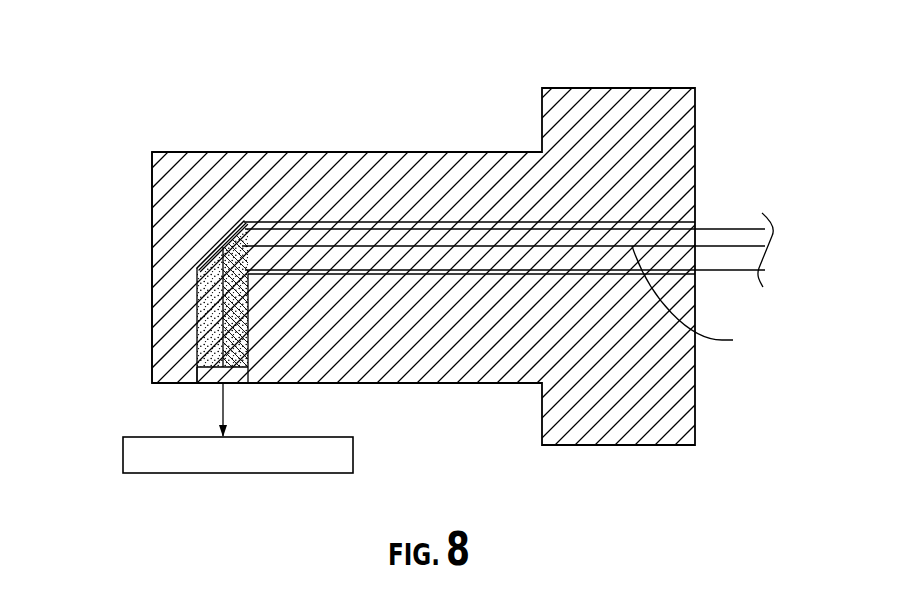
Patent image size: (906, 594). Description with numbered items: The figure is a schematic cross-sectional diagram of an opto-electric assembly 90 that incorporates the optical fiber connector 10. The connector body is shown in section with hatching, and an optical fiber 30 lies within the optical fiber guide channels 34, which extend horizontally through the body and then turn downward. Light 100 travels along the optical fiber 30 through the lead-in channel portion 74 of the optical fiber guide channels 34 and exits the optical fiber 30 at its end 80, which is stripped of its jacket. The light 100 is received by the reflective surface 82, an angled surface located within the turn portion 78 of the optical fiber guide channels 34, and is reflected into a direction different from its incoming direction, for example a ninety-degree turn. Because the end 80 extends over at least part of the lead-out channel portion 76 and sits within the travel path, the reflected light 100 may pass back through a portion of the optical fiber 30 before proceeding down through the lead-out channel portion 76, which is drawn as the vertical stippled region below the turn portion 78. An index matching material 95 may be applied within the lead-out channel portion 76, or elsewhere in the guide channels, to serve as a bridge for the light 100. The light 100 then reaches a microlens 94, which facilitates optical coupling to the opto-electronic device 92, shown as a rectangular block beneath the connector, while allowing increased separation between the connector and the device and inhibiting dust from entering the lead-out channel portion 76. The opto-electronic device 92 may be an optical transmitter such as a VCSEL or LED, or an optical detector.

The optical fiber connector 10 is at (397, 123).
The optical fiber 30 is at (595, 233).
The optical fiber guide channels 34 is at (350, 227).
The lead-in channel portion 74 is at (528, 221).
The lead-out channel portion 76 is at (252, 340).
The turn portion 78 is at (203, 257).
The end 80 is at (225, 246).
The reflective surface 82 is at (210, 252).
The opto-electric assembly 90 is at (89, 179).
The opto-electronic device 92 is at (160, 469).
The microlens 94 is at (212, 373).
The index matching material 95 is at (214, 290).
The light 100 is at (701, 300).